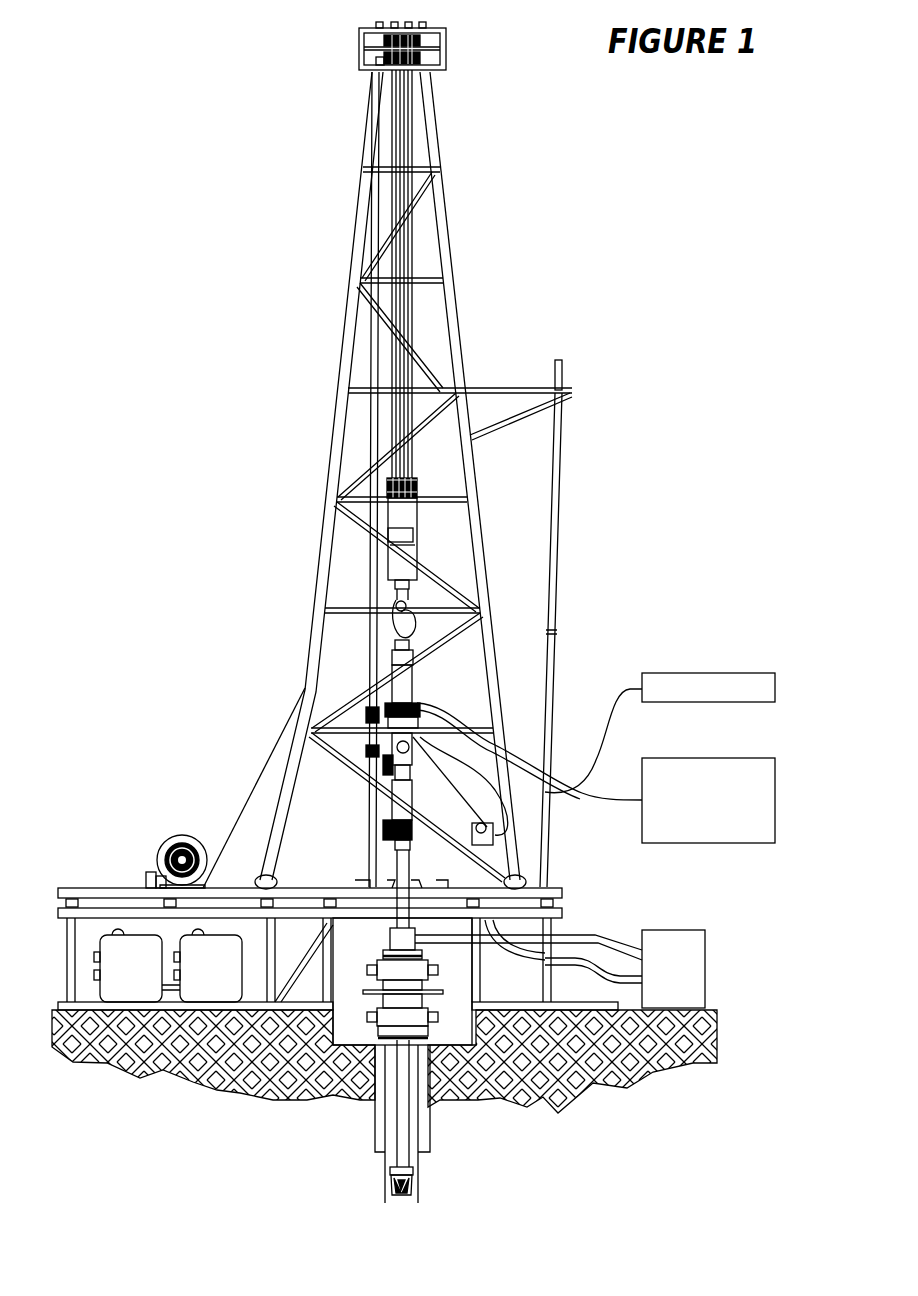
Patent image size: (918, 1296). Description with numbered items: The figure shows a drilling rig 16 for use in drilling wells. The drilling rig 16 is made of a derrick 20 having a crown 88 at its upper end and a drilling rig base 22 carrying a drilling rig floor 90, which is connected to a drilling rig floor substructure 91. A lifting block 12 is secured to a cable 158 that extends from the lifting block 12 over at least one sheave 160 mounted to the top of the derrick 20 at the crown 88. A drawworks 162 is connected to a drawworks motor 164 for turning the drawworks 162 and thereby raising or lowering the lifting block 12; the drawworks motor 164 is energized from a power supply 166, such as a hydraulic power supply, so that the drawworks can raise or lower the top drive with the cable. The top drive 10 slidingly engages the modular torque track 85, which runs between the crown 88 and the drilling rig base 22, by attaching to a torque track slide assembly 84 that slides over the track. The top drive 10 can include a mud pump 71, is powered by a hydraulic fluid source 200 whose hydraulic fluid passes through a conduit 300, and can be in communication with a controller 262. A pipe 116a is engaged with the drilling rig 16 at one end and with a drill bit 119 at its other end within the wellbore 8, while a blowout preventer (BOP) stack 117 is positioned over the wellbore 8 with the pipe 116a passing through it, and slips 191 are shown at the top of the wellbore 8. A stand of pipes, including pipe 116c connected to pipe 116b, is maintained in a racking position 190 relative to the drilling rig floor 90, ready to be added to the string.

The drilling rig 16 is at (240, 63).
The derrick 20 is at (456, 333).
The crown 88 is at (446, 50).
The sheave 160 is at (364, 38).
The cable 158 is at (413, 241).
The lifting block 12 is at (412, 517).
The modular torque track 85 is at (375, 583).
The top drive 10 is at (432, 671).
The torque track slide assembly 84 is at (368, 750).
The racking position 190 is at (563, 352).
The pipe 116b is at (556, 497).
The pipe 116c is at (551, 676).
The controller 262 is at (708, 672).
The hydraulic fluid source 200 is at (708, 757).
The conduit 300 is at (585, 803).
The drilling rig base 22 is at (78, 816).
The drilling rig floor 90 is at (553, 887).
The drilling rig floor substructure 91 is at (70, 969).
The drawworks 162 is at (156, 866).
The power supply 166 is at (130, 984).
The drawworks motor 164 is at (213, 984).
The blowout preventer (BOP) stack 117 is at (371, 958).
The mud pump 71 is at (674, 930).
The slips 191 is at (408, 888).
The wellbore 8 is at (418, 1164).
The pipe 116a is at (410, 1123).
The drill bit 119 is at (391, 1184).